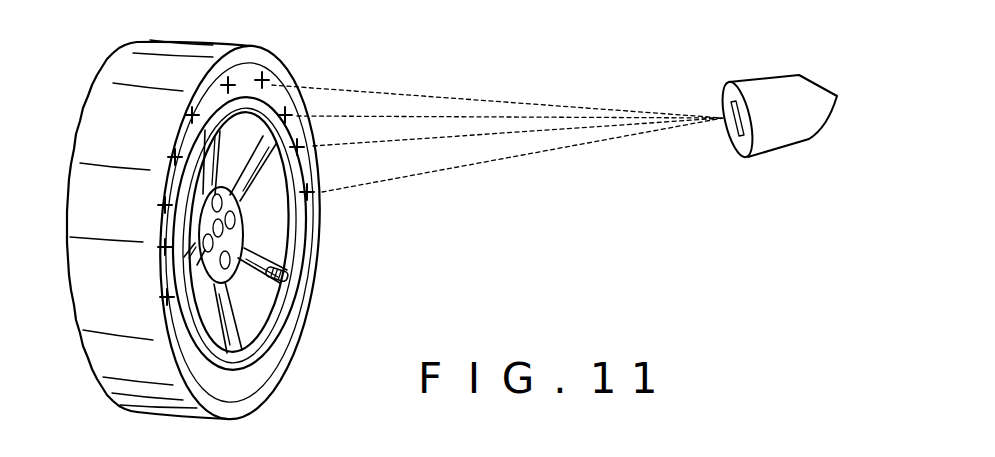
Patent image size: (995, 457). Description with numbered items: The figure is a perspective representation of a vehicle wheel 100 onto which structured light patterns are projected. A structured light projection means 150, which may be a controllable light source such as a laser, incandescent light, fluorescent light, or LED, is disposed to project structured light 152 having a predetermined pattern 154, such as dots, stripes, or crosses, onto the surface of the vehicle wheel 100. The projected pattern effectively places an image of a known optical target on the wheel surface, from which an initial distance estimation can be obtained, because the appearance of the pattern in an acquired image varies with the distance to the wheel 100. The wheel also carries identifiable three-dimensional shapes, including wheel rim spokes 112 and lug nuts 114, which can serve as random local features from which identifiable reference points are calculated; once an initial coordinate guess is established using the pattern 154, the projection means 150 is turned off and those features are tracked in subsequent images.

The vehicle wheel 100 is at (268, 382).
The wheel rim spoke 112 is at (247, 260).
The lug nut 114 is at (203, 243).
The structured light projection means 150 is at (783, 108).
The structured light 152 is at (405, 90).
The predetermined pattern 154 is at (231, 78).